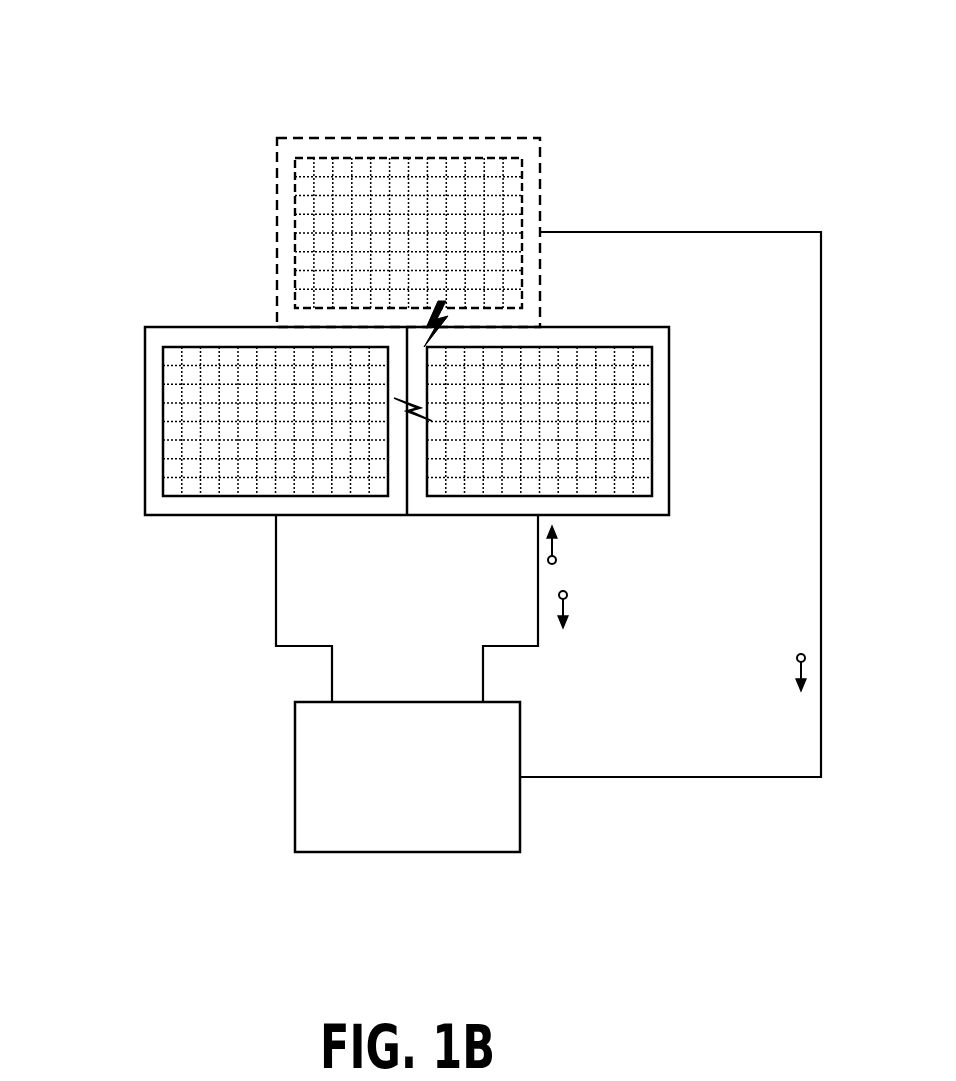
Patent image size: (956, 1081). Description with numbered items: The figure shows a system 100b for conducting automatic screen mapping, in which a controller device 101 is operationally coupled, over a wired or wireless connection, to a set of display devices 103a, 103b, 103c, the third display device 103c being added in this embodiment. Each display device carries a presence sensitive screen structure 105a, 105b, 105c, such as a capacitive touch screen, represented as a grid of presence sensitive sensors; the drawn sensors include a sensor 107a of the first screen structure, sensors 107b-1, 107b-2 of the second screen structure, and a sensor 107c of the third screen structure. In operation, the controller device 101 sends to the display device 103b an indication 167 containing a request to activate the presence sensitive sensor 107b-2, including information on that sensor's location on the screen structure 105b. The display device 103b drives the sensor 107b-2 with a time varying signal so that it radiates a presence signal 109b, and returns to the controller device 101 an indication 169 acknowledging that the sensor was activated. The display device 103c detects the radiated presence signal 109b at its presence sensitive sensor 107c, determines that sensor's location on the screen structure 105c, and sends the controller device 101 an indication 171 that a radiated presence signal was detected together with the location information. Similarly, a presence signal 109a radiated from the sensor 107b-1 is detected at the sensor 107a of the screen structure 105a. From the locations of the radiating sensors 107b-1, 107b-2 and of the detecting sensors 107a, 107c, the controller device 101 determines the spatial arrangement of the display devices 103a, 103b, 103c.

The system 100b is at (389, 35).
The controller device 101 is at (393, 799).
The display device 103a is at (145, 440).
The display device 103b is at (669, 420).
The third display device 103c is at (278, 250).
The presence sensitive screen structure 105a is at (163, 385).
The presence sensitive screen structure 105b is at (652, 383).
The presence sensitive screen structure 105c is at (297, 200).
The presence sensitive sensor 107a is at (380, 417).
The presence sensitive sensor 107b-1 is at (440, 415).
The presence sensitive sensor 107b-2 is at (437, 357).
The presence sensitive sensor 107c is at (438, 298).
The presence signal 109a is at (405, 422).
The presence signal 109b is at (447, 328).
The indication 167 is at (648, 549).
The indication 169 is at (656, 610).
The indication 171 is at (714, 675).